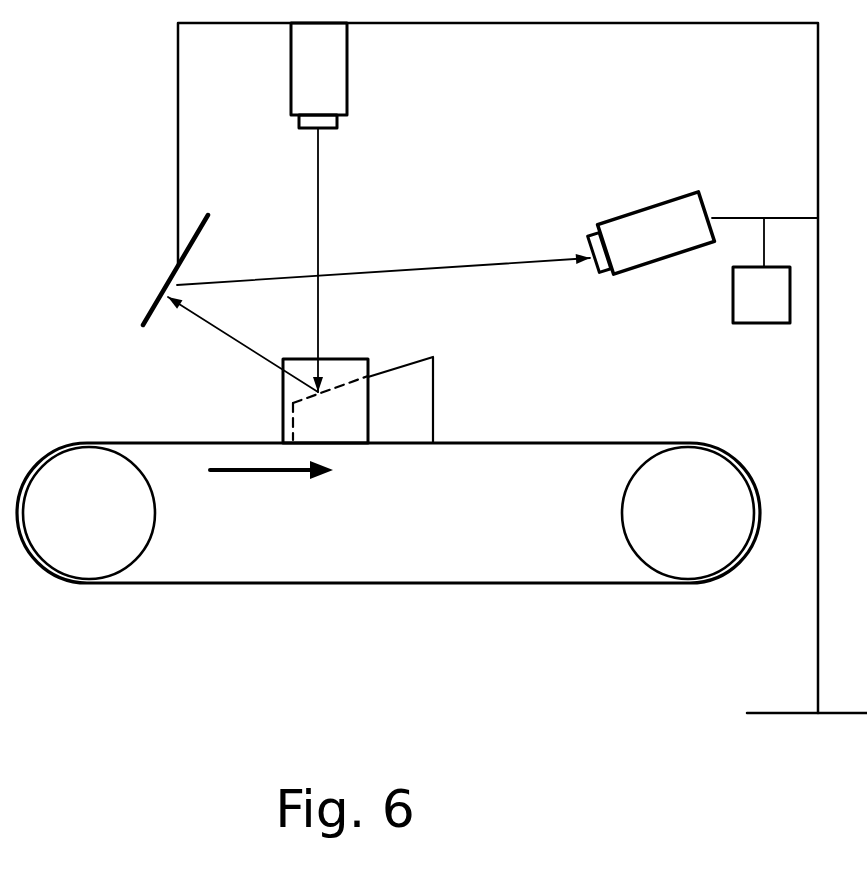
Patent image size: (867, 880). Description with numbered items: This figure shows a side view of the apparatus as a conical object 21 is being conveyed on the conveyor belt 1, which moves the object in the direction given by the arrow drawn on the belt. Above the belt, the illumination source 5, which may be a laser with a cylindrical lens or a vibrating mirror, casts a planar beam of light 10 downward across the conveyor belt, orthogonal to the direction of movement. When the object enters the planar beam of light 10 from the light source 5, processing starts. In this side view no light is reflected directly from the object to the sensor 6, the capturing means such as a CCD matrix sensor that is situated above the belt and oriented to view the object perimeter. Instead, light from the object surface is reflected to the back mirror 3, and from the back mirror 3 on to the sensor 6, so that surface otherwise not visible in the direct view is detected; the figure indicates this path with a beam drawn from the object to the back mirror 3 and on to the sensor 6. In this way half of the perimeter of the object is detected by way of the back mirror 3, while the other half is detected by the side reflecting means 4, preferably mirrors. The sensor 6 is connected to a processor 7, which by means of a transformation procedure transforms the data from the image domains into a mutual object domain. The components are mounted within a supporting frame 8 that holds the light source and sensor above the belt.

The conveyor belt 1 is at (220, 527).
The back mirror 3 is at (167, 288).
The side reflecting means 4 is at (345, 367).
The illumination source 5 is at (317, 82).
The capturing means 6 is at (648, 238).
The processor 7 is at (760, 312).
The frame 8 is at (560, 23).
The planar beam of light 10 is at (322, 198).
The conical object 21 is at (400, 403).